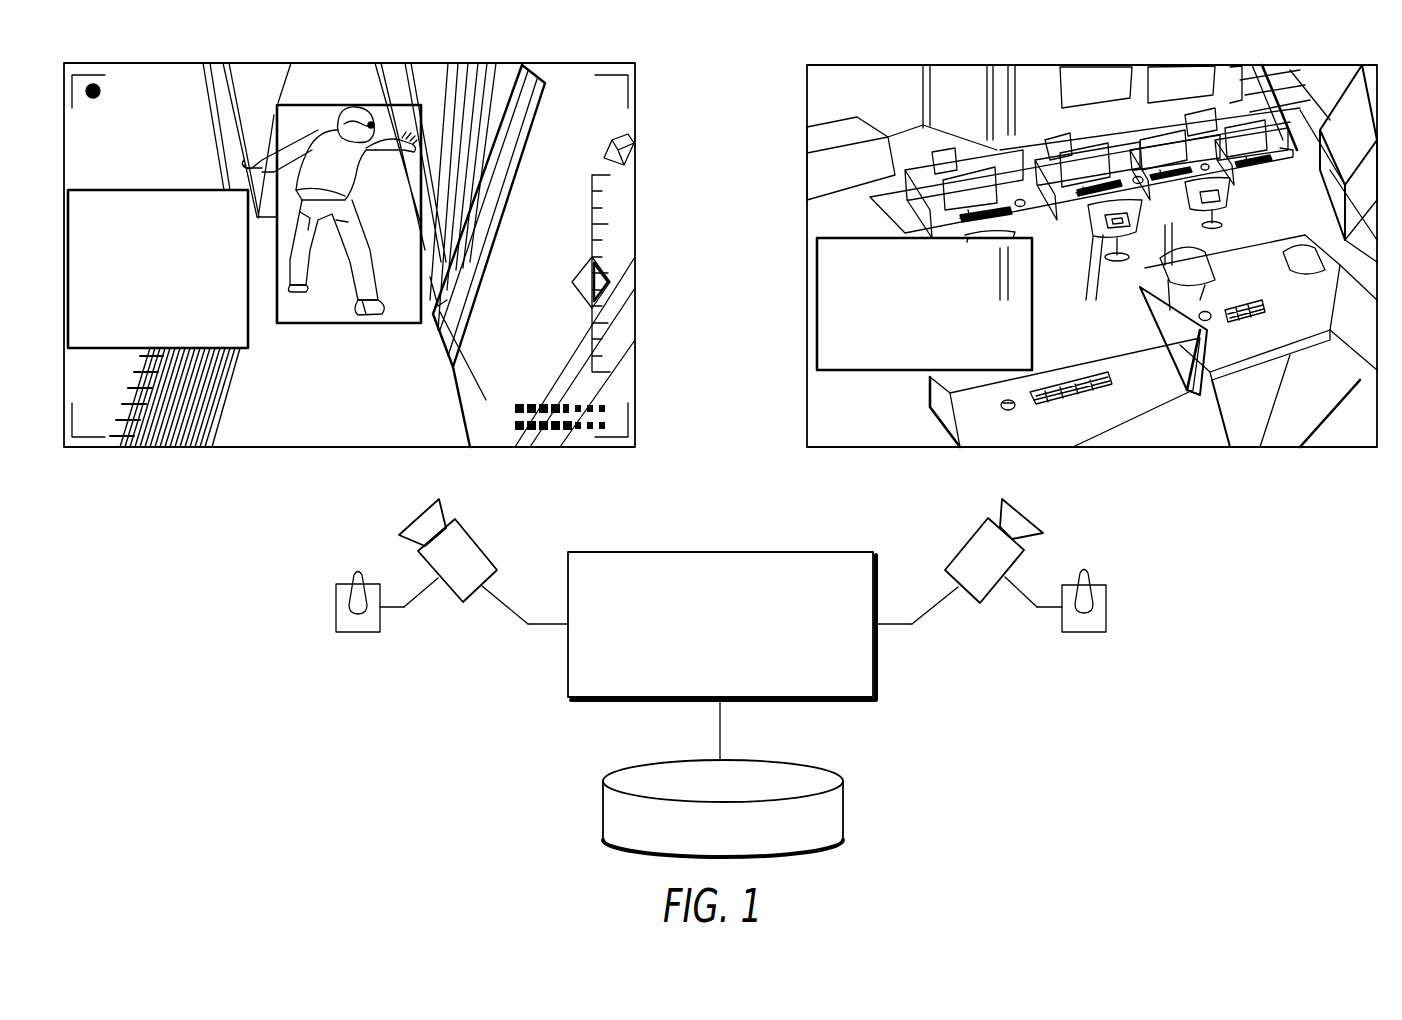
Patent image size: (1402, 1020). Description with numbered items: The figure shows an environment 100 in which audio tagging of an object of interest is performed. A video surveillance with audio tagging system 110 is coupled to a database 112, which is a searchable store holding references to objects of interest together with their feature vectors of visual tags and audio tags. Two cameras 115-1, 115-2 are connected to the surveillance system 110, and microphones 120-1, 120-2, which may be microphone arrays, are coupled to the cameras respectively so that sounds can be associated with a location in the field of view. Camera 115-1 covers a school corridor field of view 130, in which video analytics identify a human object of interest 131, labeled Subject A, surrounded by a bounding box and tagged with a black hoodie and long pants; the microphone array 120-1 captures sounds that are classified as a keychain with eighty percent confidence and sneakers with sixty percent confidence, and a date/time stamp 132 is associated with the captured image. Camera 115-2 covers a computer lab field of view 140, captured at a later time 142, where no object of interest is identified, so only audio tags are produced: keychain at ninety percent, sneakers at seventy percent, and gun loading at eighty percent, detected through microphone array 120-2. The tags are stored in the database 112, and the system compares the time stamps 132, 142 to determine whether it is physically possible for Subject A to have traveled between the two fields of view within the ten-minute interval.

The environment 100 is at (80, 25).
The video surveillance with audio tagging system 110 is at (610, 702).
The database 112 is at (603, 806).
The camera 115-1 is at (467, 533).
The camera 115-2 is at (1023, 517).
The microphone 120-1 is at (360, 632).
The microphone 120-2 is at (1107, 607).
The school corridor field of view 130 is at (548, 63).
The object of interest 131 is at (353, 325).
The date/time stamp 132 is at (320, 63).
The computer lab field of view 140 is at (1185, 75).
The date/time stamp 142 is at (850, 90).